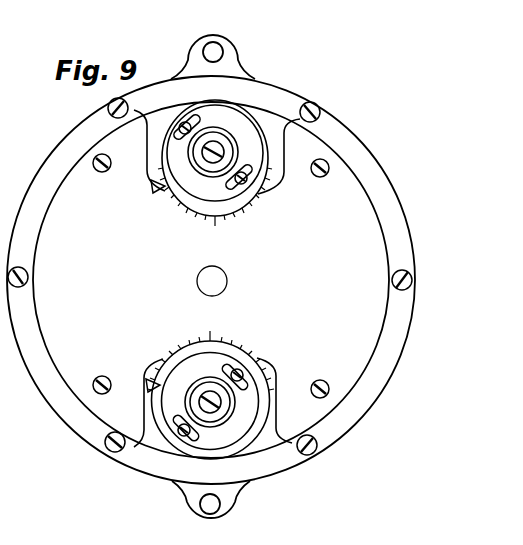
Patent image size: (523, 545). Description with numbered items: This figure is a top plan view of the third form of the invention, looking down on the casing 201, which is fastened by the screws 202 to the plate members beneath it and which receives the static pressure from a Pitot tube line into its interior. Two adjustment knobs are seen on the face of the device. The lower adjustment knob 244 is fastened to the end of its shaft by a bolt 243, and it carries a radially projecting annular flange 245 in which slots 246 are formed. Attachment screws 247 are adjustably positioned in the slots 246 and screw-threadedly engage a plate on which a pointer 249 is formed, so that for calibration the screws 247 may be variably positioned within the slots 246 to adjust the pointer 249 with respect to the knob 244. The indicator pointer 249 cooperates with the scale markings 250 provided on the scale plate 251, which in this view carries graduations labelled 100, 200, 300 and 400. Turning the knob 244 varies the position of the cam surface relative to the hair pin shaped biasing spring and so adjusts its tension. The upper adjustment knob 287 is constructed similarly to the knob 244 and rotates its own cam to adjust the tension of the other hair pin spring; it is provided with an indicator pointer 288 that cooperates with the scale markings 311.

The casing 201 is at (359, 344).
The screws 202 is at (320, 110).
The scale plate 251 is at (365, 238).
The adjustment knob 287 is at (222, 110).
The indicator pointer 288 is at (156, 185).
The scale markings 311 is at (172, 211).
The scale markings 250 is at (182, 334).
The pointer 249 is at (147, 371).
The annular flange 245 is at (183, 402).
The adjustment knob 244 is at (214, 377).
The bolt 243 is at (224, 402).
The slots 246 is at (248, 372).
The attachment screws 247 is at (243, 367).
The scale graduation 100 is at (282, 153).
The scale graduation 200 is at (253, 199).
The scale graduation 300 is at (213, 282).
The scale graduation 400 is at (147, 152).